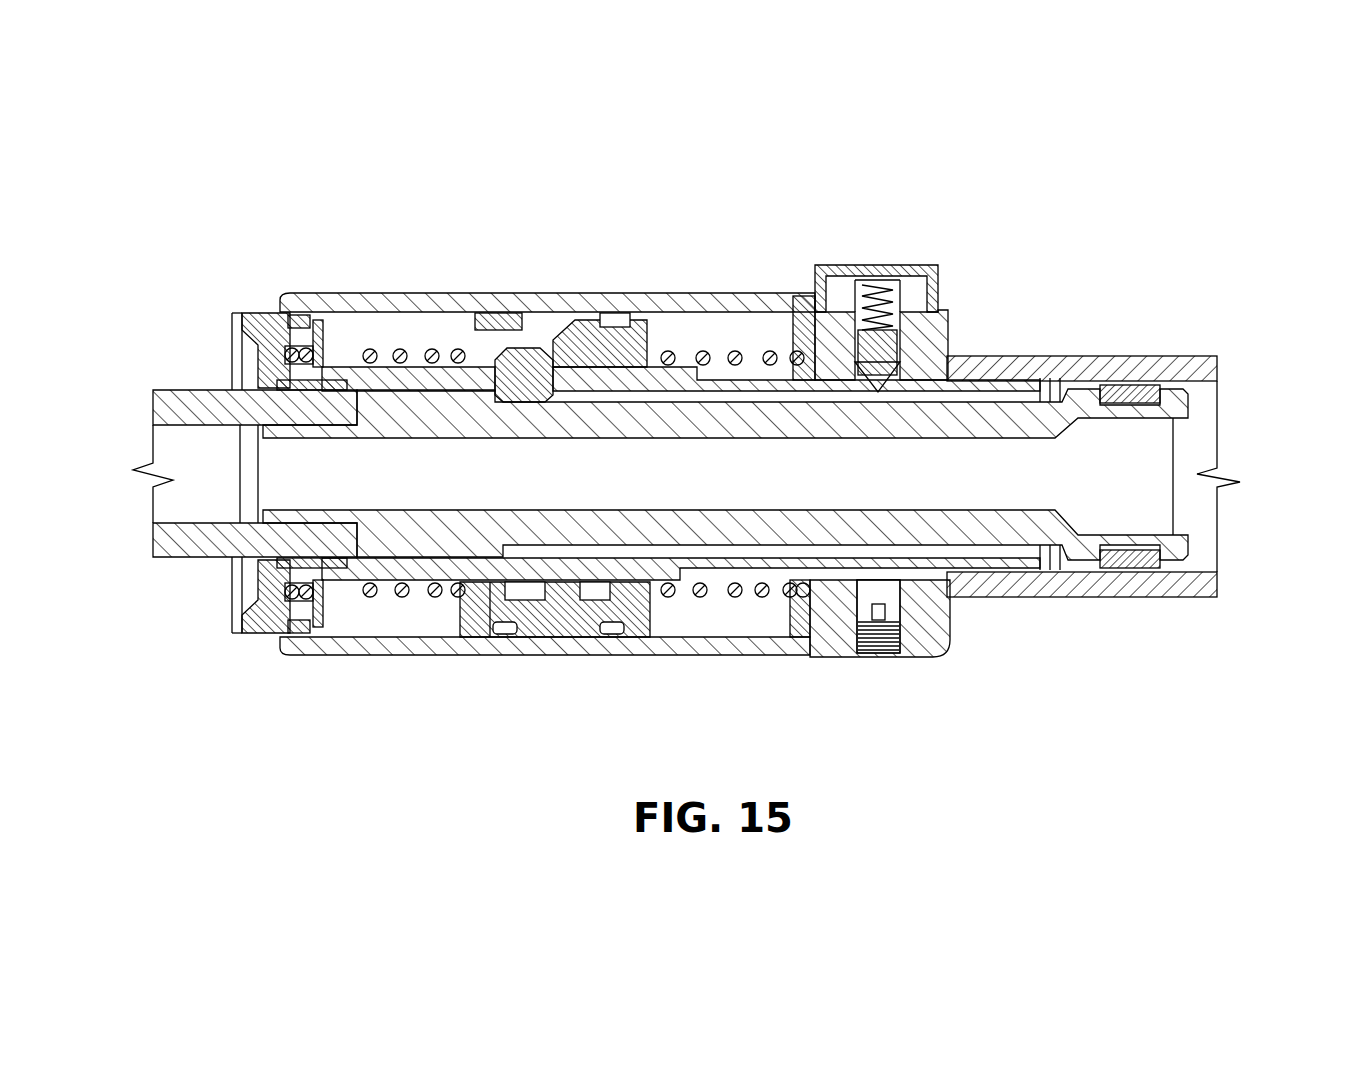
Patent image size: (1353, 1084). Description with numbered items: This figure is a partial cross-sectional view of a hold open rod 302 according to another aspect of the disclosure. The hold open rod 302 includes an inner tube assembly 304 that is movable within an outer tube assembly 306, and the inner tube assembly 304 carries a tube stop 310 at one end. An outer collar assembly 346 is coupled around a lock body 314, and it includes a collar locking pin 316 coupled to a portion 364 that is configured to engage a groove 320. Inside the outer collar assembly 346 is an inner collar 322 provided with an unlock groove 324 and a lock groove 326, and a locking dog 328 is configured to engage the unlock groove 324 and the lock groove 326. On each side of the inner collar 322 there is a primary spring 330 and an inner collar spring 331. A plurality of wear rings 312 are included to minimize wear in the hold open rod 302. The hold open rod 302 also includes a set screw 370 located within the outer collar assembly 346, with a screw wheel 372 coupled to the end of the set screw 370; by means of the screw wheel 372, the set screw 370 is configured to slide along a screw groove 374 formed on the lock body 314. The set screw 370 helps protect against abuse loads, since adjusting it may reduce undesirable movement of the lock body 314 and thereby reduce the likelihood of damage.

The hold open rod 302 is at (1132, 191).
The inner tube assembly 304 is at (188, 400).
The outer tube assembly 306 is at (1170, 355).
The tube stop 310 is at (1155, 465).
The wear rings 312 is at (1137, 568).
The lock body 314 is at (387, 380).
The collar locking pin 316 is at (883, 340).
The groove 320 is at (760, 400).
The inner collar 322 is at (560, 622).
The unlock groove 324 is at (587, 340).
The lock groove 326 is at (522, 342).
The locking dog 328 is at (583, 352).
The primary spring 330 is at (335, 637).
The inner collar spring 331 is at (793, 608).
The outer collar assembly 346 is at (413, 302).
The portion 364 is at (920, 268).
The set screw 370 is at (877, 655).
The screw wheel 372 is at (947, 632).
The screw groove 374 is at (693, 590).